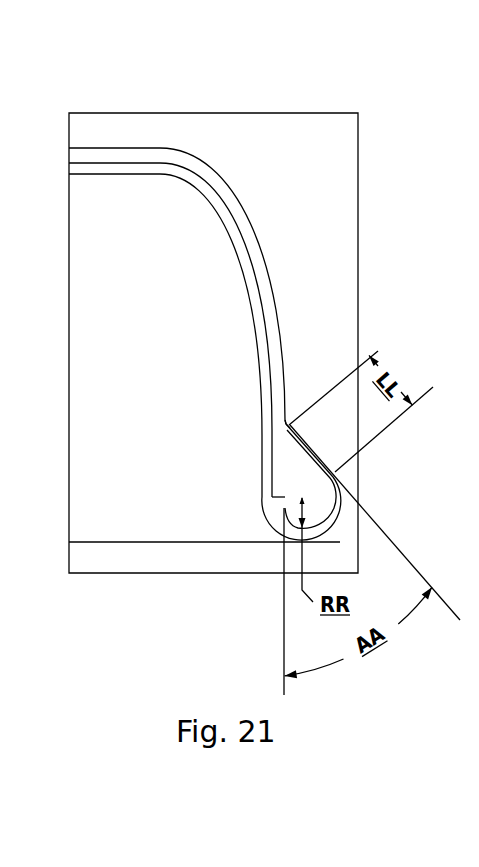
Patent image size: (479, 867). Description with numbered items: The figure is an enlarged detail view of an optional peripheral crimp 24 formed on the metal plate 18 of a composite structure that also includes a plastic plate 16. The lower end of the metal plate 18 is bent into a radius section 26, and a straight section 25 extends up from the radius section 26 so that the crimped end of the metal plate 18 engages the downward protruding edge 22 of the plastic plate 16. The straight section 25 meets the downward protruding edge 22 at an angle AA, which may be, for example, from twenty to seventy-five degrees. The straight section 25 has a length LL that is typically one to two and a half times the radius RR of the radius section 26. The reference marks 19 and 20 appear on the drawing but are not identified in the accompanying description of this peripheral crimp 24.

The plastic plate 16 is at (139, 153).
The metal plate 18 is at (212, 213).
The edge corner 19 is at (290, 413).
The hollow bead 20 is at (292, 475).
The downward protruding edge 22 is at (282, 483).
The peripheral crimp 24 is at (313, 398).
The straight section 25 is at (313, 452).
The radius section 26 is at (335, 513).